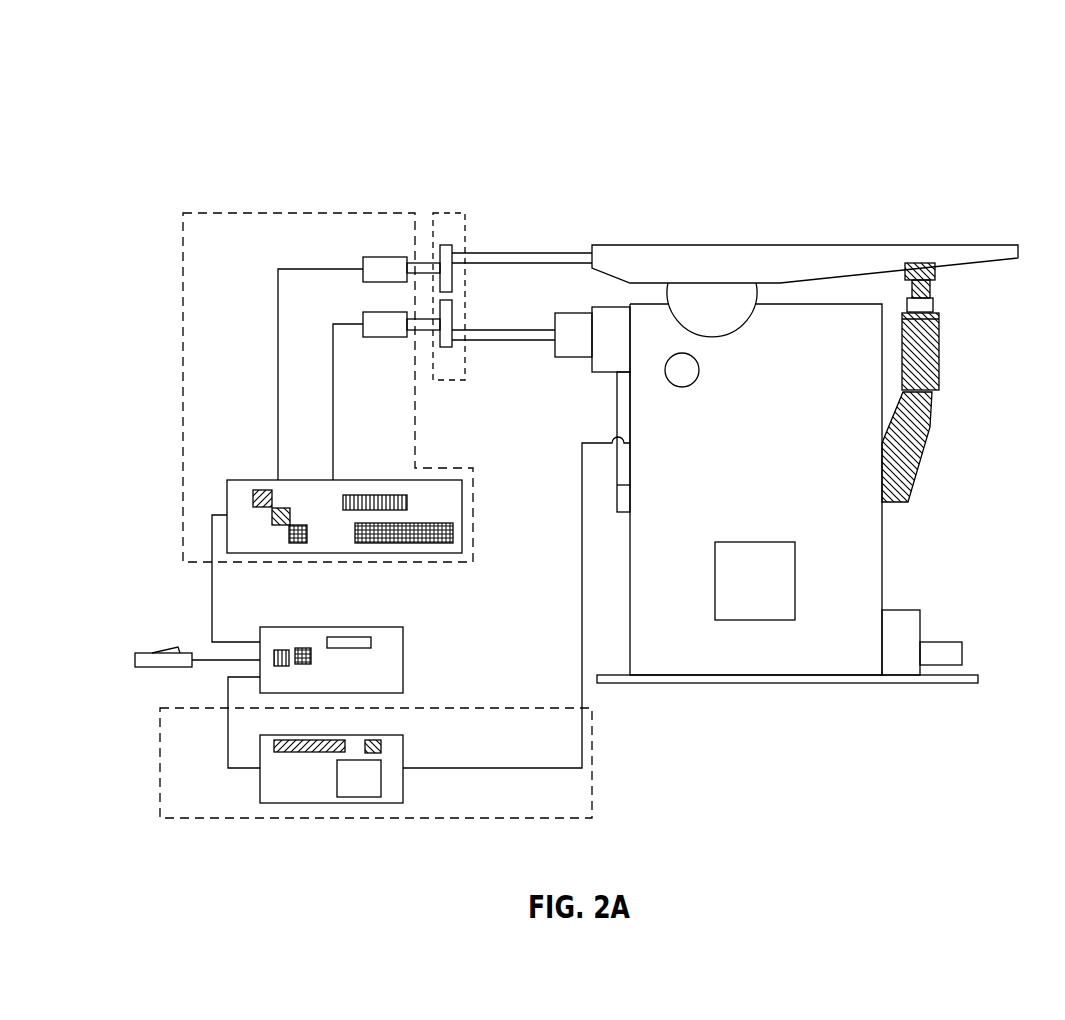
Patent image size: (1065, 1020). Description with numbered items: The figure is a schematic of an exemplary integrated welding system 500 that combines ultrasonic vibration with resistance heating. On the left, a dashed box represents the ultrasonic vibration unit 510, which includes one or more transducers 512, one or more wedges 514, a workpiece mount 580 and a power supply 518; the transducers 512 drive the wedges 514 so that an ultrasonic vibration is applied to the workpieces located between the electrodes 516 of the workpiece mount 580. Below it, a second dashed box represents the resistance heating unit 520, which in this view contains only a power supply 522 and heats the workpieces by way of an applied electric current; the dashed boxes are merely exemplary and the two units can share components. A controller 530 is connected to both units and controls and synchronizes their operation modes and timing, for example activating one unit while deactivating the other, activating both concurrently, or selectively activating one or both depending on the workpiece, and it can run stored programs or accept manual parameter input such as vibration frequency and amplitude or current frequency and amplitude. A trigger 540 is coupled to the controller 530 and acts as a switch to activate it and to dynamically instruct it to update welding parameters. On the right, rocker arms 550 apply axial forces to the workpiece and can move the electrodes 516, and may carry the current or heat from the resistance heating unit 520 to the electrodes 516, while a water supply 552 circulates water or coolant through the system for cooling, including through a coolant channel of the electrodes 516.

The integrated welding system 500 is at (275, 120).
The ultrasonic vibration unit 510 is at (183, 232).
The transducers 512 is at (360, 262).
The wedges 514 is at (423, 262).
The electrodes 516 is at (447, 228).
The workpiece mount 580 is at (466, 295).
The power supply 518 is at (247, 470).
The resistance heating unit 520 is at (592, 770).
The power supply 522 is at (418, 750).
The controller 530 is at (410, 668).
The trigger 540 is at (155, 645).
The rocker arms 550 is at (810, 243).
The water supply 552 is at (948, 640).